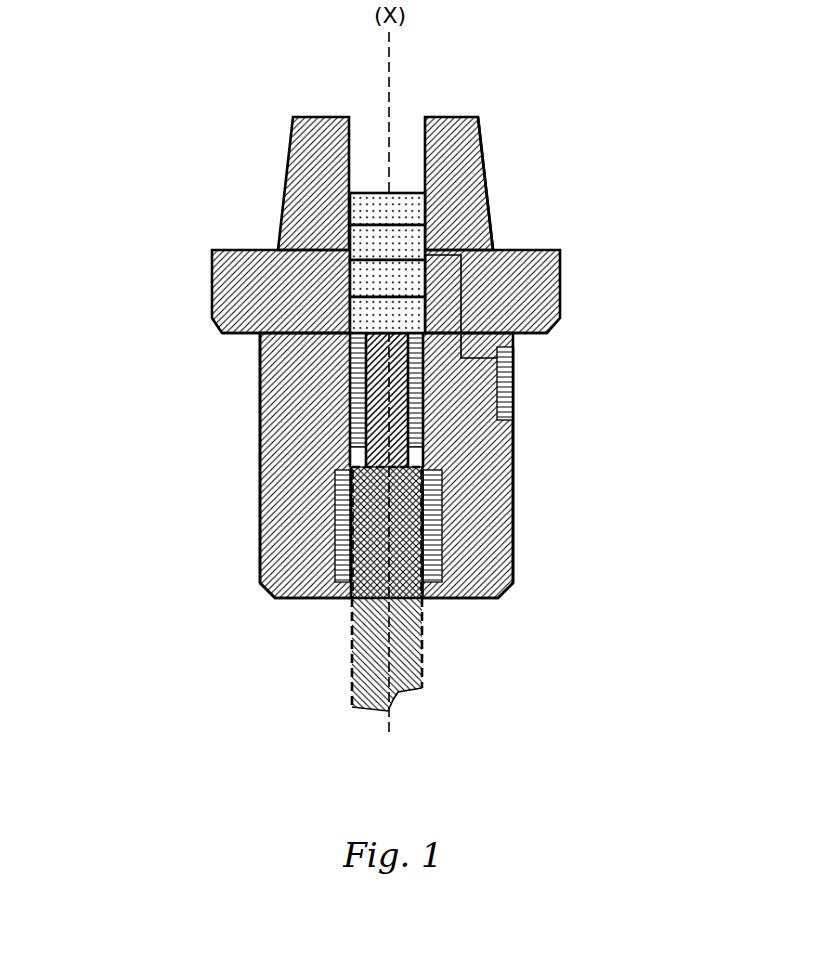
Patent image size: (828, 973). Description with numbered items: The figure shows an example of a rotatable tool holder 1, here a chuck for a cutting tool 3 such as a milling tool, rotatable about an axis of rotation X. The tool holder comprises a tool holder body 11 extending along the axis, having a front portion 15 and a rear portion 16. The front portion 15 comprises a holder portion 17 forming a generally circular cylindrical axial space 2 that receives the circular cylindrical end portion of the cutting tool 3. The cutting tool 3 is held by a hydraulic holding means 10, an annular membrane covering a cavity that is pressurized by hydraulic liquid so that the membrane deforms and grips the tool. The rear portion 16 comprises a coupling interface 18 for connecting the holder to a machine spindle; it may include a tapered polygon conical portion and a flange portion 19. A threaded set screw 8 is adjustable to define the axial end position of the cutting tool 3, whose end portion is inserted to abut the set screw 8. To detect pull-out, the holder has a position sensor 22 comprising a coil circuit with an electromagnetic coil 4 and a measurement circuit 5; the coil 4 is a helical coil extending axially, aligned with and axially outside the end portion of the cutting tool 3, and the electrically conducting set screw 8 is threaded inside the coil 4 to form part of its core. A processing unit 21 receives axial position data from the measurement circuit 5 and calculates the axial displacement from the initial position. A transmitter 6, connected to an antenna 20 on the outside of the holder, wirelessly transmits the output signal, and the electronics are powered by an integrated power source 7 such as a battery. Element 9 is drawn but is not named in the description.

The rotatable tool holder 1 is at (206, 102).
The axial space 2 is at (373, 562).
The cutting tool 3 is at (370, 643).
The electromagnetic coil 4 is at (350, 393).
The measurement circuit 5 is at (372, 315).
The transmitter 6 is at (372, 243).
The integrated power source 7 is at (372, 208).
The threaded set screw 8 is at (390, 352).
The sleeve wall 9 is at (350, 430).
The hydraulic holding means 10 is at (337, 522).
The tool holder body 11 is at (260, 445).
The front portion 15 is at (525, 512).
The rear portion 16 is at (498, 150).
The holder portion 17 is at (485, 445).
The coupling interface 18 is at (490, 200).
The flange portion 19 is at (485, 283).
The antenna 20 is at (513, 382).
The processing unit 21 is at (372, 278).
The position sensor 22 is at (407, 325).